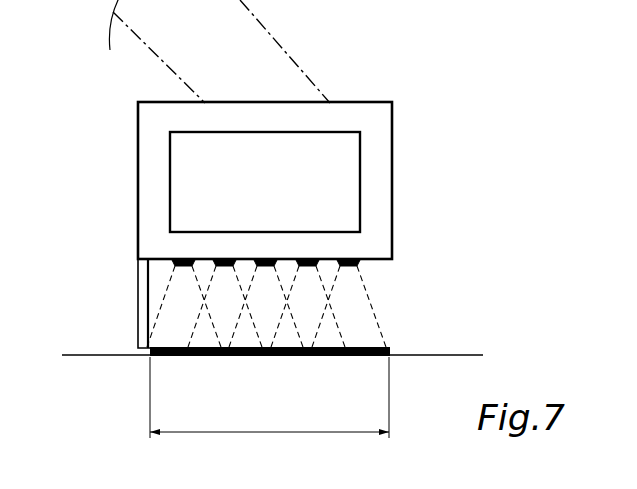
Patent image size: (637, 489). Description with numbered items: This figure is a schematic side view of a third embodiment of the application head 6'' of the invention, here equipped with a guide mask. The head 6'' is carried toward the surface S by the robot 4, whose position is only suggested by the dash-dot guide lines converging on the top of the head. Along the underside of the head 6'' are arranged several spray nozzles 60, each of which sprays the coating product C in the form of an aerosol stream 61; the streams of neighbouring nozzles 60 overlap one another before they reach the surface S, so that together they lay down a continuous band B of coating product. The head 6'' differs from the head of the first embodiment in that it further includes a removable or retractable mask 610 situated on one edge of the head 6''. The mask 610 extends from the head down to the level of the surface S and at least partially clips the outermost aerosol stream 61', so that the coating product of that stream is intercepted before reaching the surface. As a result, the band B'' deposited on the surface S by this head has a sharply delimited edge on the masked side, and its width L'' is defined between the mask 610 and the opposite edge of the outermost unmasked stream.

The robot 4 is at (219, 51).
The application head 6'' is at (291, 180).
The spray nozzle 60 is at (183, 260).
The mask 610 is at (145, 290).
The aerosol stream 61 is at (555, 16).
The aerosol stream 61' is at (266, 342).
The coated band B'' is at (270, 374).
The surface S is at (423, 355).
The band width L'' is at (269, 397).
The coating product C is at (508, 0).
The coated band B is at (633, 6).